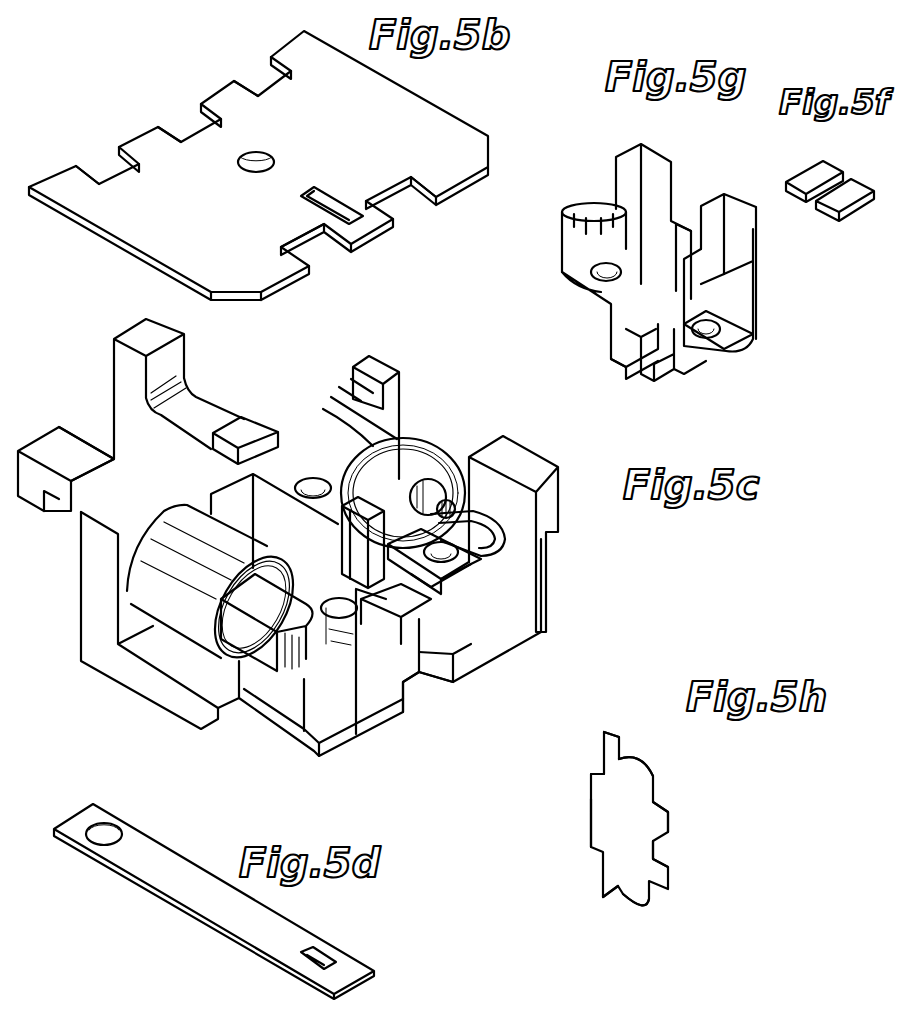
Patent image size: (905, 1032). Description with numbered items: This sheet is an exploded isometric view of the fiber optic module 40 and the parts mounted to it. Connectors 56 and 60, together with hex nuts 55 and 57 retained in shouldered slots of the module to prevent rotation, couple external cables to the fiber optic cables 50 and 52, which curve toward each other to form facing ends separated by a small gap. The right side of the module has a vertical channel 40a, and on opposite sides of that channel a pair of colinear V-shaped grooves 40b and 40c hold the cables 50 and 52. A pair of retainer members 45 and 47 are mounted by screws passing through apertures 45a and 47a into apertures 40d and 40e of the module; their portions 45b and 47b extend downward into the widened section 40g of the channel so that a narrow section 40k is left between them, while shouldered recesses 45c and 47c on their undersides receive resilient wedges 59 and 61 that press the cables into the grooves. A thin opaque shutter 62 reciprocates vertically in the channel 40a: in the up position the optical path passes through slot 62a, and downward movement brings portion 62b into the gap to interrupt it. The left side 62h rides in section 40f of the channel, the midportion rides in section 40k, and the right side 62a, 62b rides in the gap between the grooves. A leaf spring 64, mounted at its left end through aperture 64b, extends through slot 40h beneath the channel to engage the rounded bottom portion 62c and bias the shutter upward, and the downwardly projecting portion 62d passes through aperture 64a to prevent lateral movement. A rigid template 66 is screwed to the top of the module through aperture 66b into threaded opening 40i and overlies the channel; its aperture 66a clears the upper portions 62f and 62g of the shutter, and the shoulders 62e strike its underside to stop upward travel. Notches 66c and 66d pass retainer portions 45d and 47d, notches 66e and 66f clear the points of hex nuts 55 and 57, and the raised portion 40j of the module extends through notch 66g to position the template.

In FIG. 5B, the template 66 is at (405, 95).
In FIG. 5B, the aperture 66a is at (338, 198).
In FIG. 5B, the aperture 66b is at (262, 155).
In FIG. 5B, the notch 66c is at (402, 200).
In FIG. 5B, the notch 66d is at (322, 252).
In FIG. 5B, the notch 66e is at (267, 72).
In FIG. 5B, the notch 66f is at (108, 170).
In FIG. 5B, the notch 66g is at (190, 125).
In FIG. 5G, the retainer member 47 is at (558, 270).
In FIG. 5G, the aperture 47a is at (603, 282).
In FIG. 5G, the portion 47b is at (623, 363).
In FIG. 5G, the shouldered recess 47c is at (677, 248).
In FIG. 5G, the portion 47d is at (653, 163).
In FIG. 5G, the retainer member 45 is at (760, 300).
In FIG. 5G, the aperture 45a is at (715, 340).
In FIG. 5G, the portion 45b is at (667, 372).
In FIG. 5G, the shouldered recess 45c is at (707, 283).
In FIG. 5G, the portion 45d is at (737, 210).
In FIG. 5G, the narrow section 40k is at (653, 383).
In FIG. 5F, the wedge 61 is at (828, 175).
In FIG. 5F, the wedge 59 is at (857, 195).
In FIG. 5H, the shutter 62 is at (668, 775).
In FIG. 5H, the slot 62a is at (665, 860).
In FIG. 5H, the portion 62b is at (668, 838).
In FIG. 5H, the rounded bottom portion 62c is at (642, 907).
In FIG. 5H, the downwardly projecting portion 62d is at (615, 895).
In FIG. 5H, the shoulders 62e is at (593, 773).
In FIG. 5H, the rounded upper portion 62f is at (635, 762).
In FIG. 5H, the upwardly projecting portion 62g is at (608, 738).
In FIG. 5H, the left side 62h is at (592, 820).
In FIG. 5D, the leaf spring 64 is at (190, 915).
In FIG. 5D, the aperture 64a is at (322, 955).
In FIG. 5D, the aperture 64b is at (103, 860).
In FIG. 5C, the module 40 is at (548, 543).
In FIG. 5C, the vertical channel 40a is at (425, 660).
In FIG. 5C, the V-shaped groove 40b is at (440, 590).
In FIG. 5C, the V-shaped groove 40c is at (392, 620).
In FIG. 5C, the aperture 40d is at (505, 585).
In FIG. 5C, the aperture 40e is at (338, 625).
In FIG. 5C, the section 40f is at (433, 452).
In FIG. 5C, the widened section 40g is at (380, 565).
In FIG. 5C, the slot 40h is at (405, 693).
In FIG. 5C, the threaded opening 40i is at (302, 500).
In FIG. 5C, the raised portion 40j is at (250, 418).
In FIG. 5C, the fiber optic cable 50 is at (500, 560).
In FIG. 5C, the fiber optic cable 52 is at (362, 735).
In FIG. 5C, the hex nut 55 is at (335, 400).
In FIG. 5C, the connector 56 is at (430, 452).
In FIG. 5C, the hex nut 57 is at (80, 520).
In FIG. 5C, the connector 60 is at (150, 595).